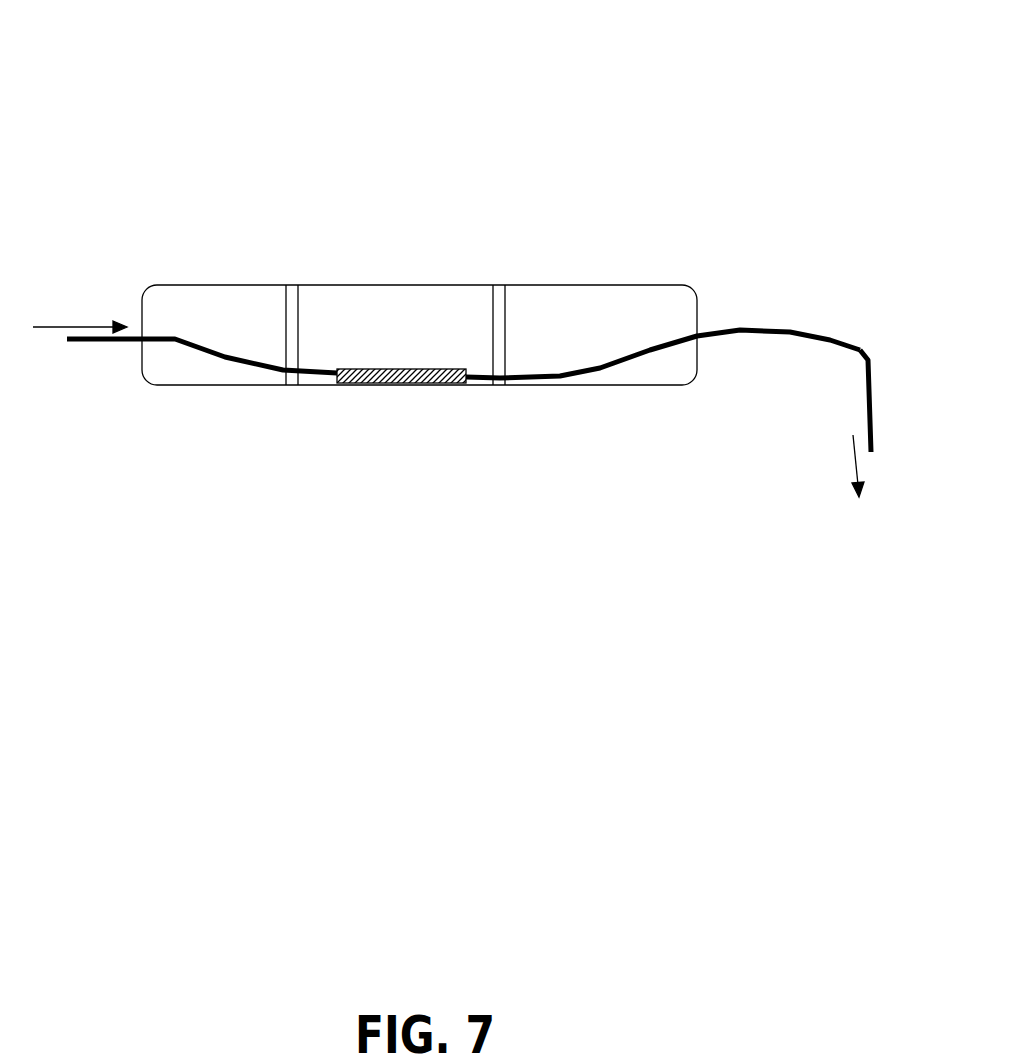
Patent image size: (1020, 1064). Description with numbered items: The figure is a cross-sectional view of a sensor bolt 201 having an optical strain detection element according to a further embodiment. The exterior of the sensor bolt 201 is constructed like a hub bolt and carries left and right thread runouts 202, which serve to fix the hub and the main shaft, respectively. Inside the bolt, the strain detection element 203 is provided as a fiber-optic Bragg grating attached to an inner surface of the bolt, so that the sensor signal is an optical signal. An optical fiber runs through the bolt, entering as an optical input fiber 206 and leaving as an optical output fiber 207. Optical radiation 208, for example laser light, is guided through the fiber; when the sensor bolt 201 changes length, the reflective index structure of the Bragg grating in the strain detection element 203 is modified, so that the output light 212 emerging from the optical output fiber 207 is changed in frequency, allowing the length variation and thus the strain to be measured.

The sensor bolt 201 is at (630, 49).
The thread runouts 202 is at (292, 285).
The strain detection element 203 is at (380, 375).
The optical input fiber 206 is at (98, 343).
The optical output fiber 207 is at (867, 400).
The optical radiation 208 is at (62, 325).
The output light 212 is at (853, 470).